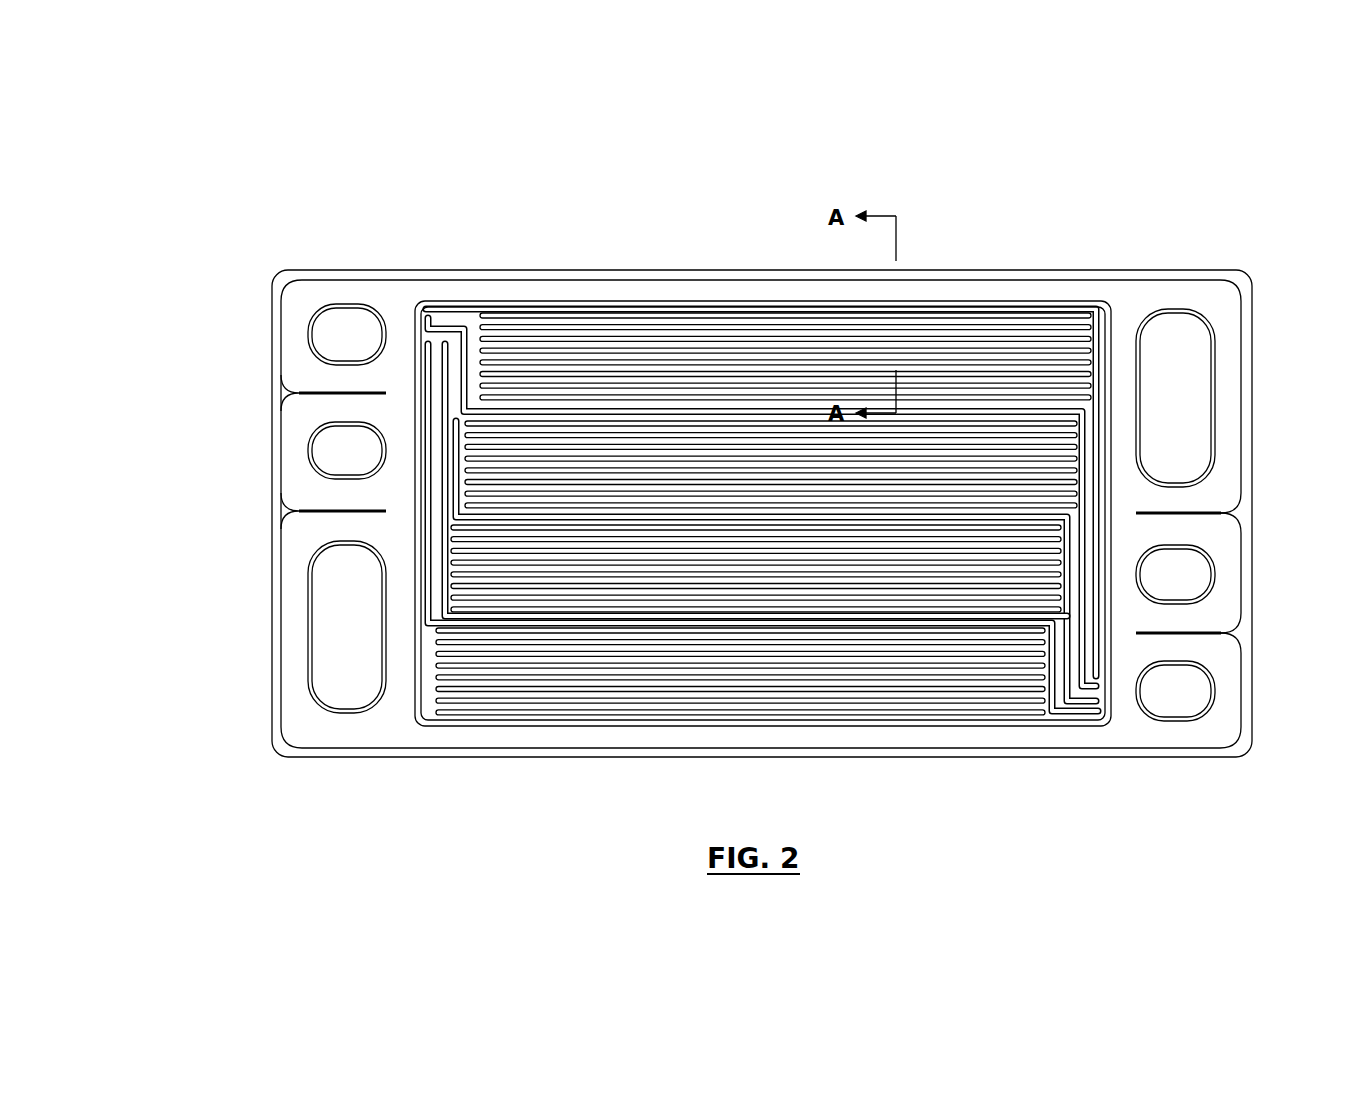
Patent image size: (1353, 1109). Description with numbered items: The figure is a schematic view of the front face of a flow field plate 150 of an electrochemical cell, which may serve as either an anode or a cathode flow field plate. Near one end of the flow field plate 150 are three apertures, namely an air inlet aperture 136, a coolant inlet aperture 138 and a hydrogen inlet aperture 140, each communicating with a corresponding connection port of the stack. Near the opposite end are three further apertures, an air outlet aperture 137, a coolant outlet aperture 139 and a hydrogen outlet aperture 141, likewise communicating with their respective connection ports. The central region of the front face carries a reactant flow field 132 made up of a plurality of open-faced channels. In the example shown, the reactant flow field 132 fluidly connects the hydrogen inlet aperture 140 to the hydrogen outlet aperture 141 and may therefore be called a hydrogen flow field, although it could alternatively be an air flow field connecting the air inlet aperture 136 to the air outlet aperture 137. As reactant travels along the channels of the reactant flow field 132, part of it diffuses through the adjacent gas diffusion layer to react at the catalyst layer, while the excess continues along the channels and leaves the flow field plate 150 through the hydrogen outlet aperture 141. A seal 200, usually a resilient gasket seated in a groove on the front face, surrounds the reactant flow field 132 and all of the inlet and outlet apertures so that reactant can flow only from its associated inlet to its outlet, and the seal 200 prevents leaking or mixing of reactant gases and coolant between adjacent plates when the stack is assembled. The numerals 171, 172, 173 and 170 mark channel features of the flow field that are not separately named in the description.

The flow field plate 150 is at (878, 128).
The seal 200 is at (444, 766).
The reactant flow field 132 is at (965, 345).
The inlet channel 171 is at (454, 344).
The first flow channel set 172 is at (578, 318).
The last flow channel set 173 is at (558, 700).
The outlet channel 170 is at (1050, 675).
The hydrogen outlet aperture 141 is at (318, 322).
The coolant outlet aperture 139 is at (322, 450).
The air outlet aperture 137 is at (320, 628).
The air inlet aperture 136 is at (1185, 362).
The coolant inlet aperture 138 is at (1183, 569).
The hydrogen inlet aperture 140 is at (1185, 688).